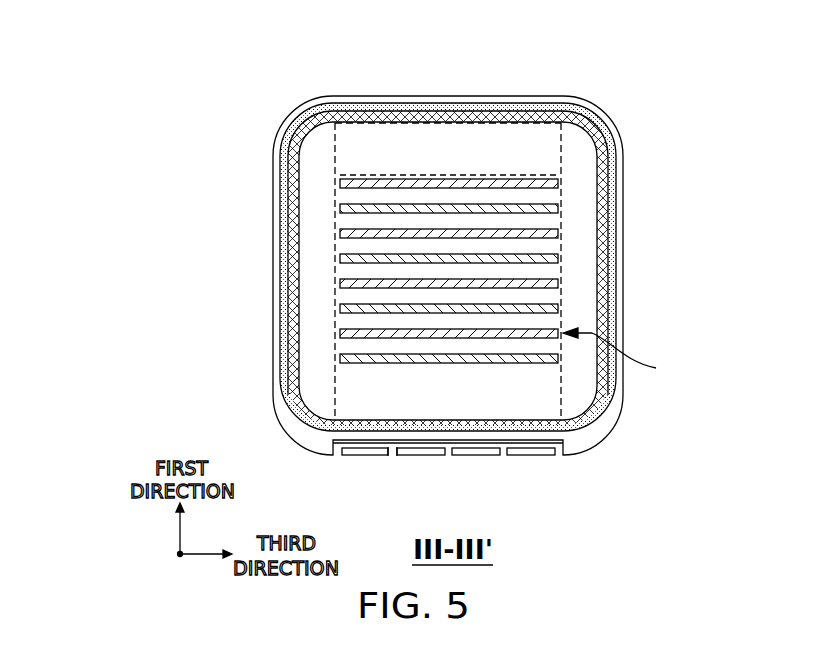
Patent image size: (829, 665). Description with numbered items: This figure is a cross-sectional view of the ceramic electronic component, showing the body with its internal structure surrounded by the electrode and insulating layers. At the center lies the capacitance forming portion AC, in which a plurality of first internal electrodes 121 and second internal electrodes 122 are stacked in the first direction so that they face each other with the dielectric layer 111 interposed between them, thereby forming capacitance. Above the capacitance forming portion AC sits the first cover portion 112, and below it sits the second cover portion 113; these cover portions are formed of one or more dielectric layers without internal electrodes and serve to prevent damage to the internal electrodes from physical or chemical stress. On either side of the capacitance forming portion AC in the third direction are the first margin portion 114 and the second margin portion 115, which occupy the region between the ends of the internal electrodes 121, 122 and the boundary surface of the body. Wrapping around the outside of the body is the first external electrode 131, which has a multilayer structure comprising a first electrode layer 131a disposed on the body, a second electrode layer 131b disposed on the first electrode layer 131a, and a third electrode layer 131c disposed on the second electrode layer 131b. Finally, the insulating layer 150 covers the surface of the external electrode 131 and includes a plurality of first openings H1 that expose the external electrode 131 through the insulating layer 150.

The dielectric layer 111 is at (380, 195).
The first cover portion 112 is at (434, 137).
The second cover portion 113 is at (474, 403).
The first margin portion 114 is at (311, 357).
The second margin portion 115 is at (583, 273).
The first internal electrode 121 is at (484, 183).
The second internal electrode 122 is at (516, 262).
The first external electrode 131 is at (381, 275).
The first electrode layer 131a is at (281, 250).
The second electrode layer 131b is at (286, 275).
The third electrode layer 131c is at (292, 300).
The insulating layer 150 is at (530, 452).
The first opening H1 is at (393, 455).
The capacitance forming portion AC is at (624, 355).